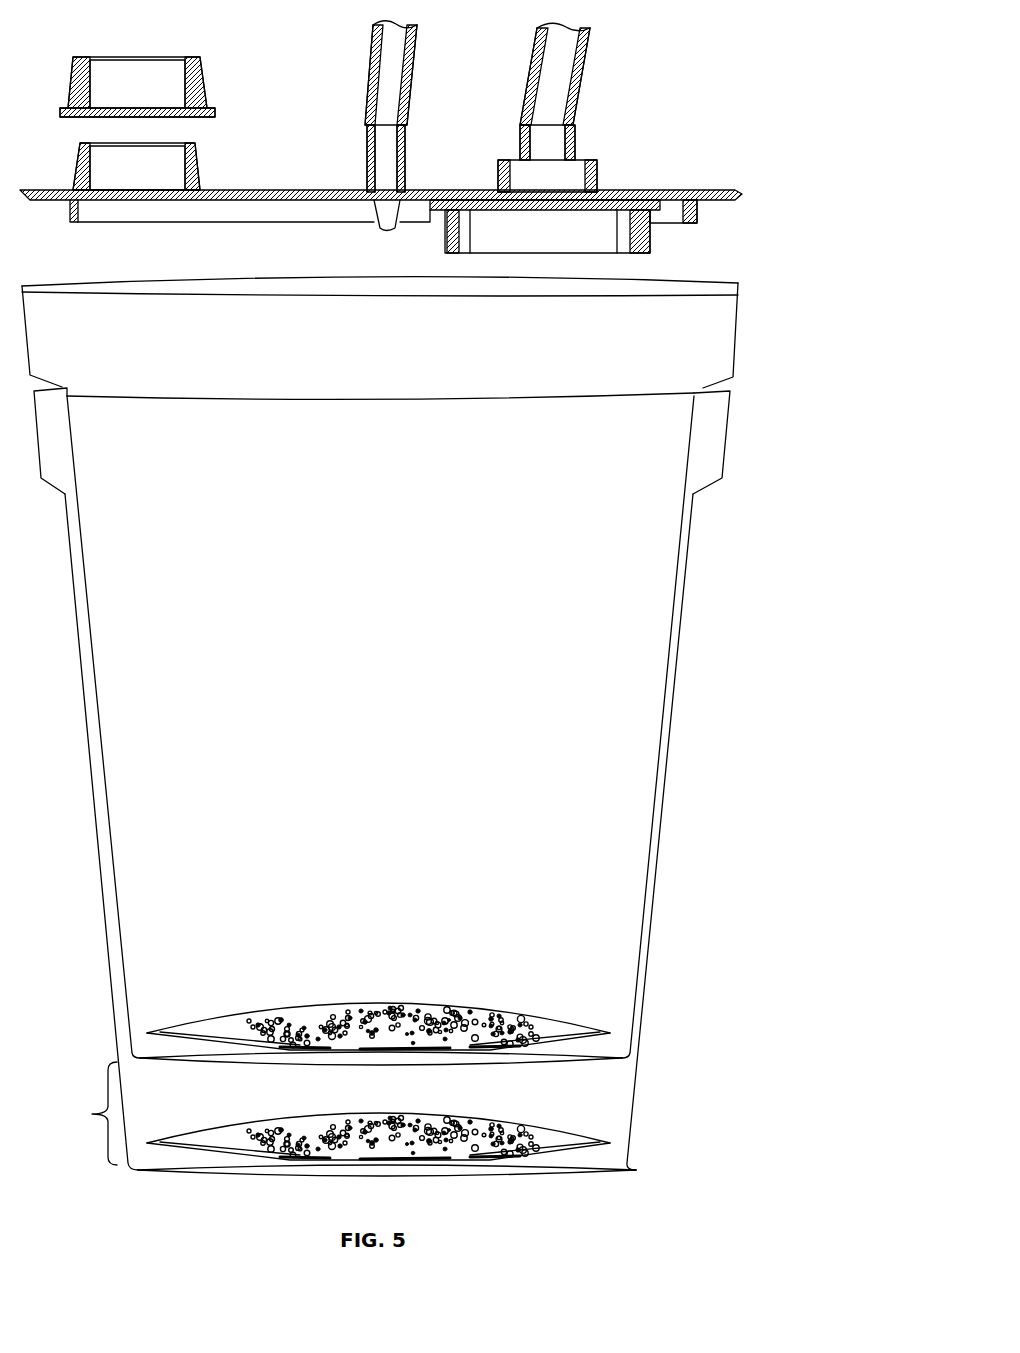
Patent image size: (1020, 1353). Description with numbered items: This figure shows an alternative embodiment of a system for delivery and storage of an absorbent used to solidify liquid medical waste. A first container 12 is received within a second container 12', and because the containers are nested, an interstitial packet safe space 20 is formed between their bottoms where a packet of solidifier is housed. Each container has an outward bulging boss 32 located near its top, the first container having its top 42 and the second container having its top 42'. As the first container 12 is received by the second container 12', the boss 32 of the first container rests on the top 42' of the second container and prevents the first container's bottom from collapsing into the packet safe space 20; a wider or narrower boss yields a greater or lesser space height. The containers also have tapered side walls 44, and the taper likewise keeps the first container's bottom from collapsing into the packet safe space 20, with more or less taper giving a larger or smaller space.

The first container 12 is at (643, 540).
The second container 12' is at (426, 835).
The packet safe space 20 is at (87, 1113).
The boss 32 is at (700, 321).
The top of first container 42 is at (705, 287).
The top of second container 42' is at (489, 399).
The tapered side wall 44 is at (652, 918).